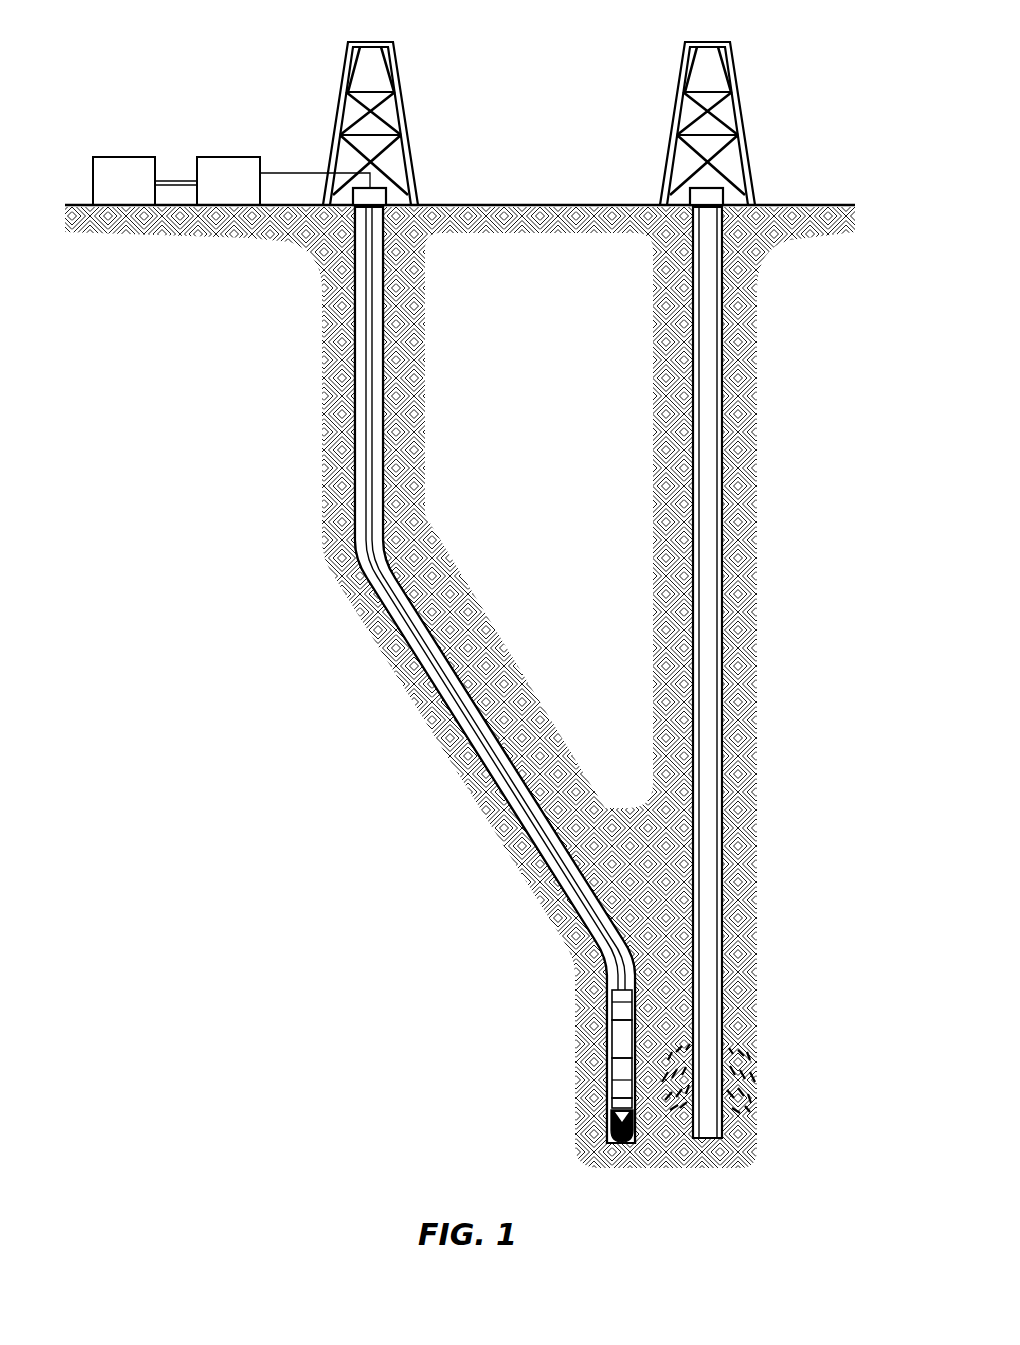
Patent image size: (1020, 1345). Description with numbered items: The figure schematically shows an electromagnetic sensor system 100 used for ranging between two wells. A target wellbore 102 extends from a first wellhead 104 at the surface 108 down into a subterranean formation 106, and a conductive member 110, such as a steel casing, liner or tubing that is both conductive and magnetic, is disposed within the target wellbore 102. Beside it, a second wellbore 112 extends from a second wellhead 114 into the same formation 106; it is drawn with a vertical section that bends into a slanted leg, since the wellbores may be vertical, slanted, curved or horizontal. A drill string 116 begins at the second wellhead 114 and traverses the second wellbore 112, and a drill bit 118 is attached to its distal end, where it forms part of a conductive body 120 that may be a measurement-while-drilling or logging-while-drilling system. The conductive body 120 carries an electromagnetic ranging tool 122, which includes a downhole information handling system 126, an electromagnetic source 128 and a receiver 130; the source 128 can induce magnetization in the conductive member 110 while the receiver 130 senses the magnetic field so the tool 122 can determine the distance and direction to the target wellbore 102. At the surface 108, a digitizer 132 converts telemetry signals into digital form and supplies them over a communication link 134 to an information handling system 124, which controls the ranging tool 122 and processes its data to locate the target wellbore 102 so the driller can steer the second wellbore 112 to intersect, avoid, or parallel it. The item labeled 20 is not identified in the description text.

The electromagnetic sensor system 100 is at (460, 605).
The target wellbore 102 is at (724, 369).
The first wellhead 104 is at (723, 197).
The subterranean formation 106 is at (460, 687).
The surface 108 is at (540, 205).
The conductive member 110 is at (722, 530).
The second wellbore 112 is at (357, 412).
The second wellhead 114 is at (386, 197).
The drill string 116 is at (353, 347).
The drill bit 118 is at (611, 1128).
The conductive body 120 is at (536, 1064).
The electromagnetic ranging tool 122 is at (612, 1042).
The information handling system 124 is at (124, 181).
The downhole information handling system 126 is at (612, 997).
The electromagnetic source 128 is at (612, 1011).
The receiver 130 is at (612, 1090).
The digitizer 132 is at (228, 181).
The communication link 134 is at (177, 178).
The drill string 20 is at (417, 637).